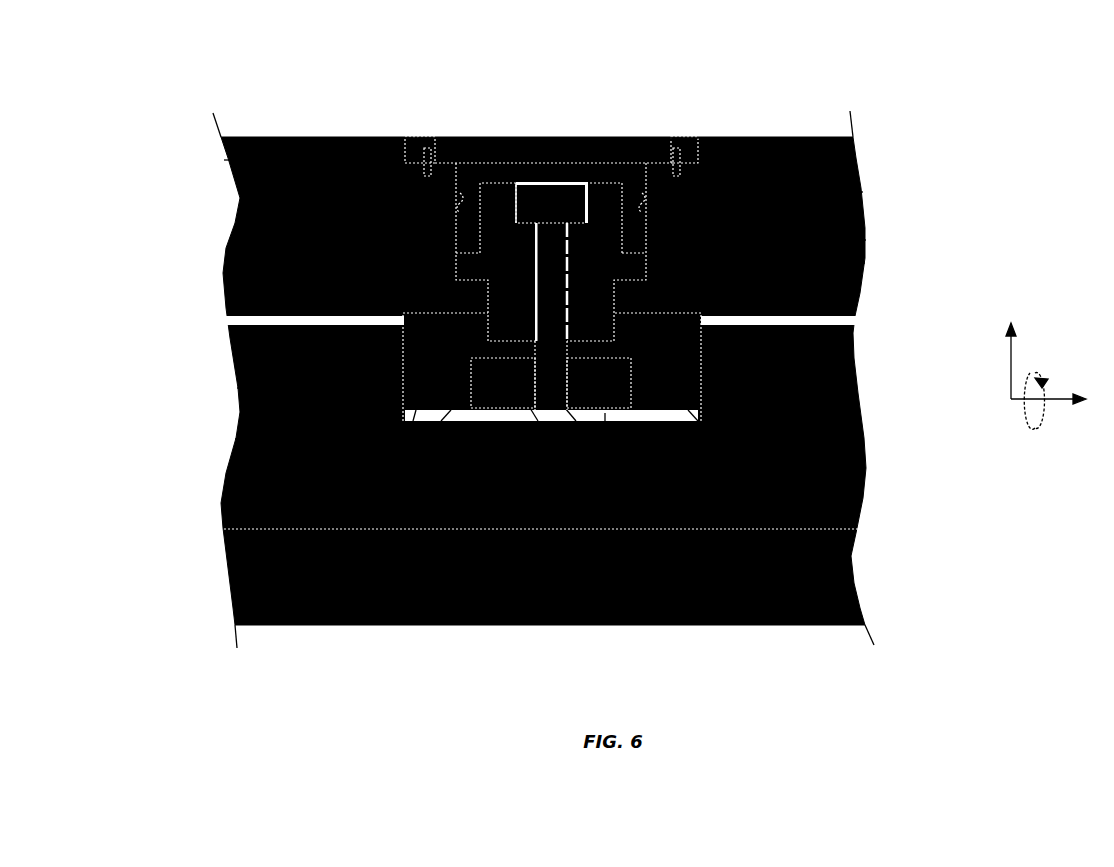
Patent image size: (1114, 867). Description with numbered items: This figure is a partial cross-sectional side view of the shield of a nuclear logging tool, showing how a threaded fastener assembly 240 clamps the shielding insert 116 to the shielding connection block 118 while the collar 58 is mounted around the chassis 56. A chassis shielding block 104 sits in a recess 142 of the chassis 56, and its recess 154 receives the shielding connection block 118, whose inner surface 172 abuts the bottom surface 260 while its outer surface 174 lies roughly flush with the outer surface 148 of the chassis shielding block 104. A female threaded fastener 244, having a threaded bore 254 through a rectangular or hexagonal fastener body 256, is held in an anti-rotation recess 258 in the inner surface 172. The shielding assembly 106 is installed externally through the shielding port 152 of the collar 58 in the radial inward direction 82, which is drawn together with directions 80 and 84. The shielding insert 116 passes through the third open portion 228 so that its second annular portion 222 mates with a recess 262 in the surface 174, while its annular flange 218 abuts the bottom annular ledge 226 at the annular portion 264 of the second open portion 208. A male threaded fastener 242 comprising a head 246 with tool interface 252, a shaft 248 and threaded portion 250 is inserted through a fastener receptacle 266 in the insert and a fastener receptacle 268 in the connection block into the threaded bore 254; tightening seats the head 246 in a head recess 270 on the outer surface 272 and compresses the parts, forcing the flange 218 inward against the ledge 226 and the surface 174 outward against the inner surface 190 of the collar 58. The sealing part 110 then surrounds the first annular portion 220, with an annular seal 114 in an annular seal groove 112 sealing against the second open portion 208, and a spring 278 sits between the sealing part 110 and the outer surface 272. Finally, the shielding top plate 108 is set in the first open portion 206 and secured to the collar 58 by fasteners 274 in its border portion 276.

The chassis 56 is at (218, 556).
The collar 58 is at (848, 150).
The x-axis 80 is at (1055, 392).
The radial inward direction 82 is at (1003, 352).
The rotation direction 84 is at (1030, 415).
The chassis shielding block 104 is at (858, 470).
The shielding assembly 106 is at (383, 58).
The shielding top plate 108 is at (637, 128).
The sealing part 110 is at (212, 128).
The annular seal groove 112 is at (340, 129).
The annular seal 114 is at (305, 129).
The shielding insert 116 is at (218, 240).
The shielding connection block 118 is at (232, 404).
The recess 142 is at (843, 548).
The outer surface 148 is at (218, 323).
The shielding port 152 is at (785, 128).
The recess 154 is at (426, 617).
The inner surface 172 is at (318, 617).
The outer surface 174 is at (215, 271).
The inner surface 190 is at (218, 300).
The first open portion 206 is at (697, 128).
The second open portion 208 is at (722, 128).
The annular flange 218 is at (215, 152).
The first annular portion 220 is at (855, 184).
The second annular portion 222 is at (228, 380).
The bottom annular ledge 226 is at (230, 182).
The third open portion 228 is at (232, 196).
The threaded fastener assembly 240 is at (670, 617).
The male threaded fastener 242 is at (857, 255).
The female threaded fastener 244 is at (368, 617).
The head 246 is at (485, 128).
The shaft 248 is at (847, 369).
The threaded portion 250 is at (580, 617).
The tool interface 252 is at (533, 128).
The threaded bore 254 is at (620, 617).
The fastener body 256 is at (740, 617).
The recess 258 is at (226, 431).
The bottom surface 260 is at (536, 617).
The recess 262 is at (225, 357).
The annular portion 264 is at (226, 222).
The fastener receptacle 266 is at (590, 128).
The fastener receptacle 268 is at (850, 426).
The head recess 270 is at (563, 128).
The outer surface 272 is at (480, 128).
The fasteners 274 is at (413, 129).
The border portion 276 is at (397, 129).
The spring 278 is at (455, 128).